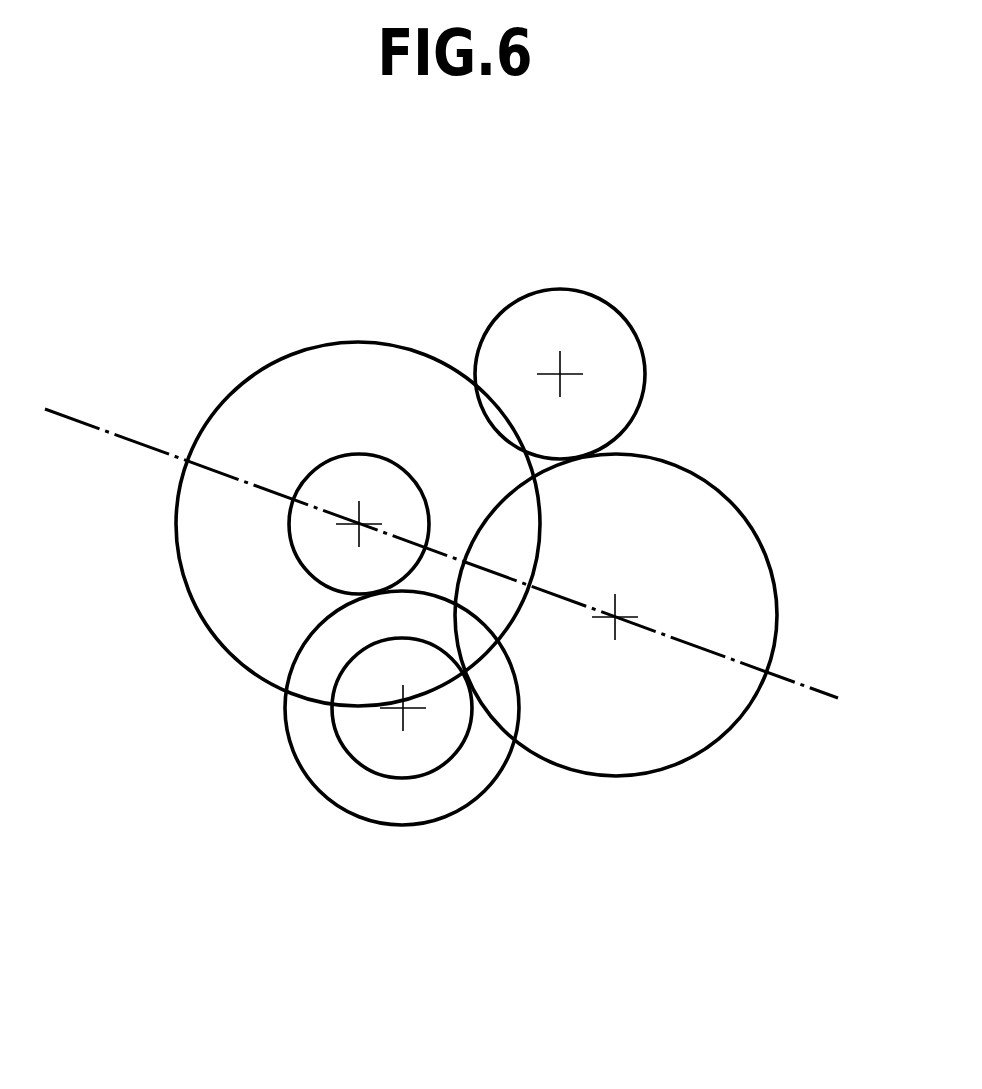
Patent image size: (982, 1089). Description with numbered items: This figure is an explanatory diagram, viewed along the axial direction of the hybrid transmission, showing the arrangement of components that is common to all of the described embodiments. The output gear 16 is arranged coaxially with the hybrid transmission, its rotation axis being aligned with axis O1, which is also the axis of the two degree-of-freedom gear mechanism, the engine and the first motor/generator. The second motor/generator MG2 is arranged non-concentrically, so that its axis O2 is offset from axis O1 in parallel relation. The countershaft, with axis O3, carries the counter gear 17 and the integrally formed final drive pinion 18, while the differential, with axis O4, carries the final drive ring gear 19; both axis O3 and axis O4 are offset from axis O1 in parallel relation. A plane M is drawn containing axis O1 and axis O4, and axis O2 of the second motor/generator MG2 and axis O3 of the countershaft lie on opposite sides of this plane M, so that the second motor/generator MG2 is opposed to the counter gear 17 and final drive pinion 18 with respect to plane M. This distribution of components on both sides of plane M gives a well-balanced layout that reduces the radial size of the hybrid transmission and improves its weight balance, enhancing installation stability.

The output gear 16 is at (293, 547).
The counter gear 17 is at (430, 824).
The final drive pinion 18 is at (467, 743).
The final drive ring gear 19 is at (750, 523).
The second motor/generator MG2 is at (632, 298).
The plane M is at (135, 441).
The axis of hybrid transmission O1 is at (362, 523).
The axis of second motor/generator O2 is at (556, 372).
The axis of countershaft O3 is at (400, 710).
The axis of differential O4 is at (614, 622).